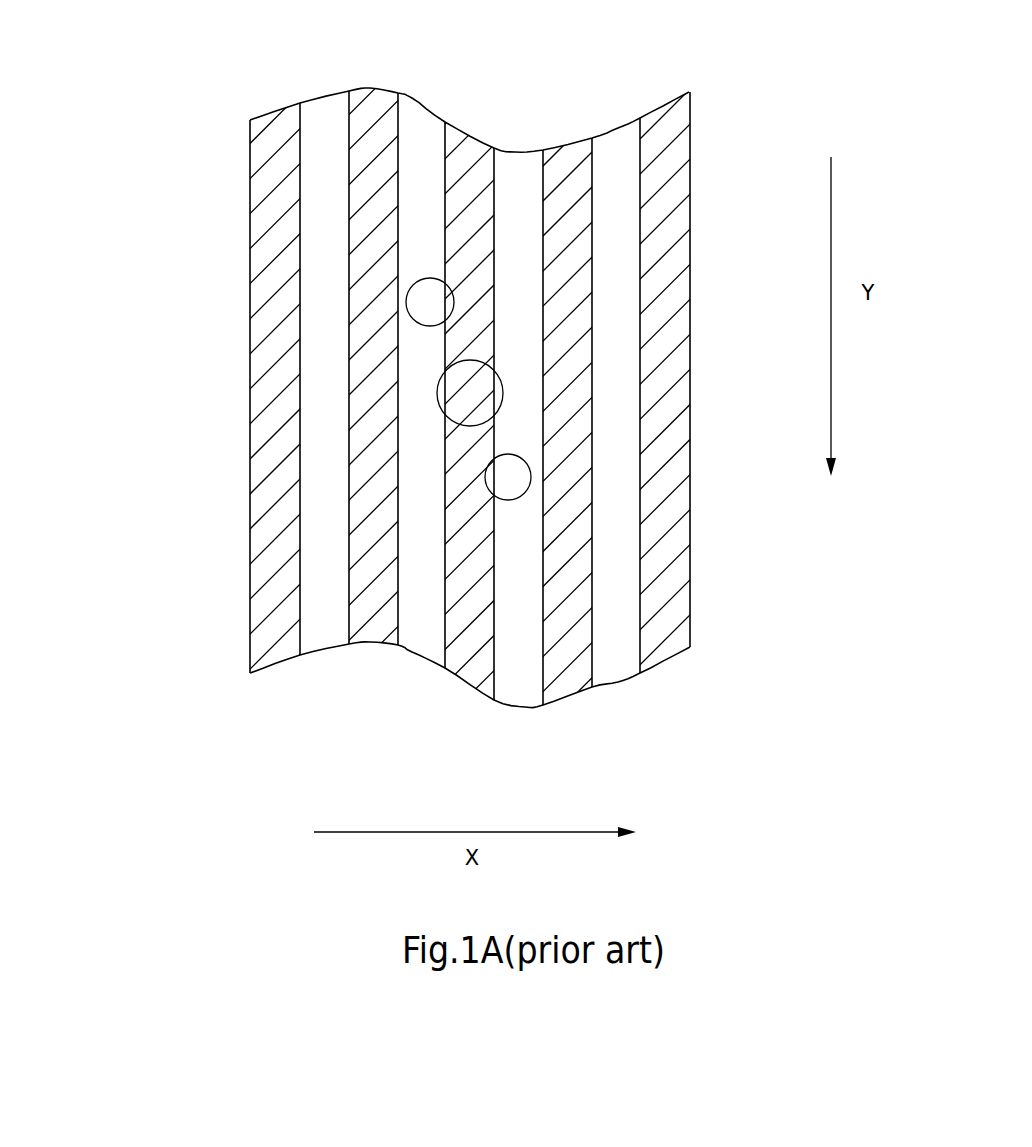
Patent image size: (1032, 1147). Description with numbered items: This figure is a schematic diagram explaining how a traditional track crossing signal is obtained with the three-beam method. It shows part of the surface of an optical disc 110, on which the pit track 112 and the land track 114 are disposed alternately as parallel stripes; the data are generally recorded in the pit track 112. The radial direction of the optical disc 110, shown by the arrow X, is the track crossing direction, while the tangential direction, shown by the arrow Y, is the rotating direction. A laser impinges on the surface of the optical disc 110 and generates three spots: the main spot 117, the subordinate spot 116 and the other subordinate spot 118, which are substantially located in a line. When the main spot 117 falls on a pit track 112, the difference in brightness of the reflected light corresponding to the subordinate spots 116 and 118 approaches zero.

The optical disc 110 is at (228, 366).
The pit track 112 is at (290, 635).
The land track 114 is at (328, 117).
The subordinate spot 116 is at (433, 300).
The main spot 117 is at (475, 398).
The other subordinate spot 118 is at (512, 483).